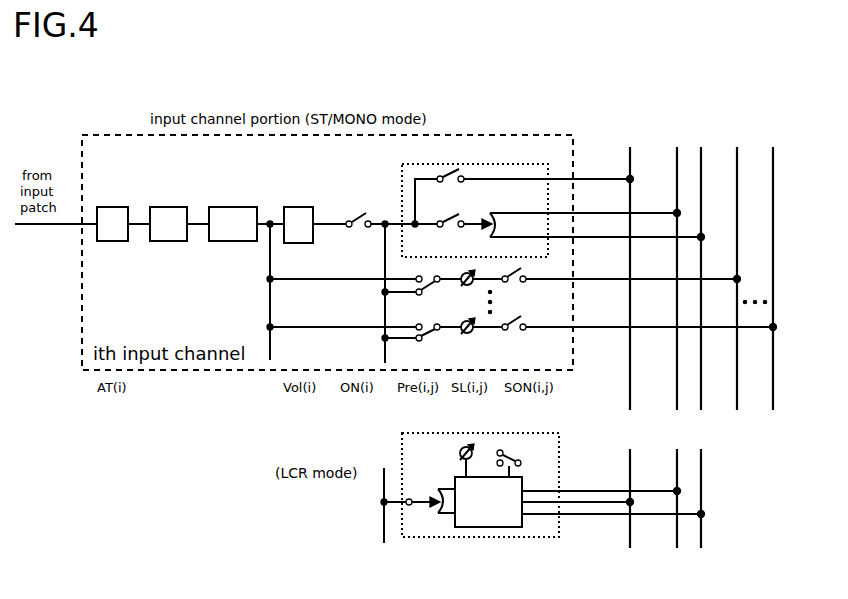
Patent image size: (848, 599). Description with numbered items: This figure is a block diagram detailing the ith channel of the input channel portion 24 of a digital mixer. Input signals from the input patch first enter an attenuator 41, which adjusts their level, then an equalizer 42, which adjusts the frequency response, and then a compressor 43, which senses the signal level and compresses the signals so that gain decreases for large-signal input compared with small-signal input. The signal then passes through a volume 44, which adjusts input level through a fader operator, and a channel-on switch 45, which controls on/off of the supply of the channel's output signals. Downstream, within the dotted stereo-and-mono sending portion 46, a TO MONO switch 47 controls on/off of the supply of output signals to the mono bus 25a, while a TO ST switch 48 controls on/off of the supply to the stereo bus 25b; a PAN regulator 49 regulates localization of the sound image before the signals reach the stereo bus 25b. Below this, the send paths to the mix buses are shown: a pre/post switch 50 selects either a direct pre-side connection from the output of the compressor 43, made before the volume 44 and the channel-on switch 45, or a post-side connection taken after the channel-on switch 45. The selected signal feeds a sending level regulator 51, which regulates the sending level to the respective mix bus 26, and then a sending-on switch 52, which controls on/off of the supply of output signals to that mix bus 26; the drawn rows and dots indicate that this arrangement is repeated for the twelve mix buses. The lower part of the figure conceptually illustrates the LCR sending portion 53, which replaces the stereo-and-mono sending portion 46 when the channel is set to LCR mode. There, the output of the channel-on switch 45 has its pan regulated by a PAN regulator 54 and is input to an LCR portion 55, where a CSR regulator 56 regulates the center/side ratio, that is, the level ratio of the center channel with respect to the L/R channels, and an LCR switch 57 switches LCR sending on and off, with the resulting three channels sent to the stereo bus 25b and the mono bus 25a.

The input channel portion 24 is at (81, 149).
The mono bus 25a is at (624, 105).
The stereo bus 25b is at (681, 105).
The mix bus 26 is at (749, 105).
The attenuator 41 is at (114, 207).
The equalizer 42 is at (168, 207).
The compressor 43 is at (231, 207).
The volume 44 is at (301, 207).
The channel-on switch 45 is at (358, 217).
The stereo-and-mono sending portion 46 is at (402, 171).
The TO MONO switch 47 is at (454, 175).
The TO ST switch 48 is at (453, 222).
The PAN regulator 49 is at (512, 212).
The pre/post switch 50 is at (421, 322).
The sending level regulator 51 is at (458, 323).
The sending-on switch 52 is at (517, 321).
The LCR sending portion 53 is at (401, 445).
The PAN regulator 54 is at (435, 492).
The LCR portion 55 is at (489, 528).
The CSR regulator 56 is at (458, 454).
The LCR switch 57 is at (514, 460).